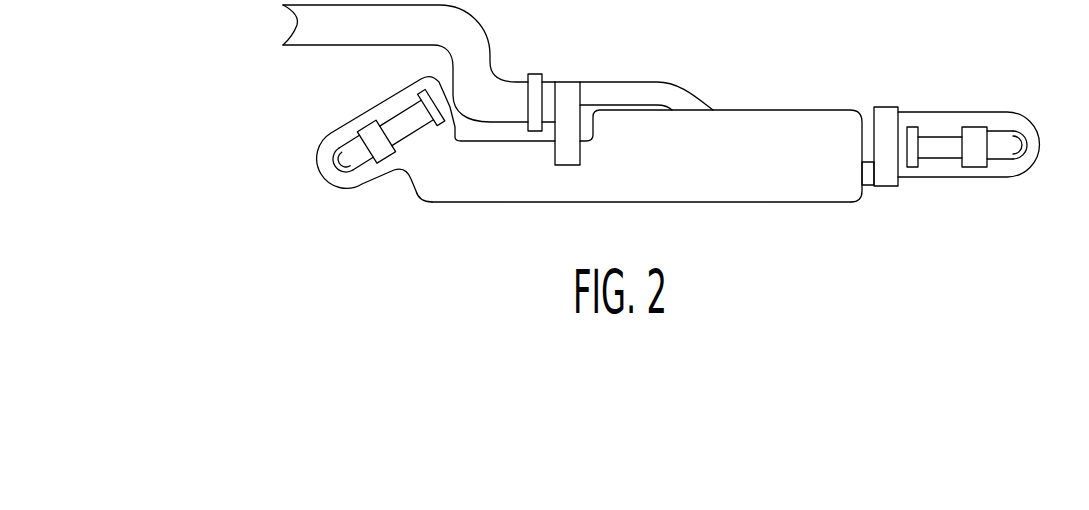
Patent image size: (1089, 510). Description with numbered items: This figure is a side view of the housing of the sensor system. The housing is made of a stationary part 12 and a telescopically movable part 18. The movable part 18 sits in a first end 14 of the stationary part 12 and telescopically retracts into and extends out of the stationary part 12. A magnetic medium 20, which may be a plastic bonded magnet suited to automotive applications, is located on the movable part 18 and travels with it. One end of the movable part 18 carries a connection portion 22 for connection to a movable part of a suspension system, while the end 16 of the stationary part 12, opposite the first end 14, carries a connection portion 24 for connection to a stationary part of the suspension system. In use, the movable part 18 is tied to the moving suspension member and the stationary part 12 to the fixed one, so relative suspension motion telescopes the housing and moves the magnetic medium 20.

The stationary part 12 is at (732, 171).
The first end 14 is at (833, 194).
The end of the stationary part 16 is at (355, 183).
The telescopically movable part 18 is at (809, 100).
The magnetic medium 20 is at (866, 186).
The connection portion 22 is at (1005, 152).
The connection portion 24 is at (343, 157).